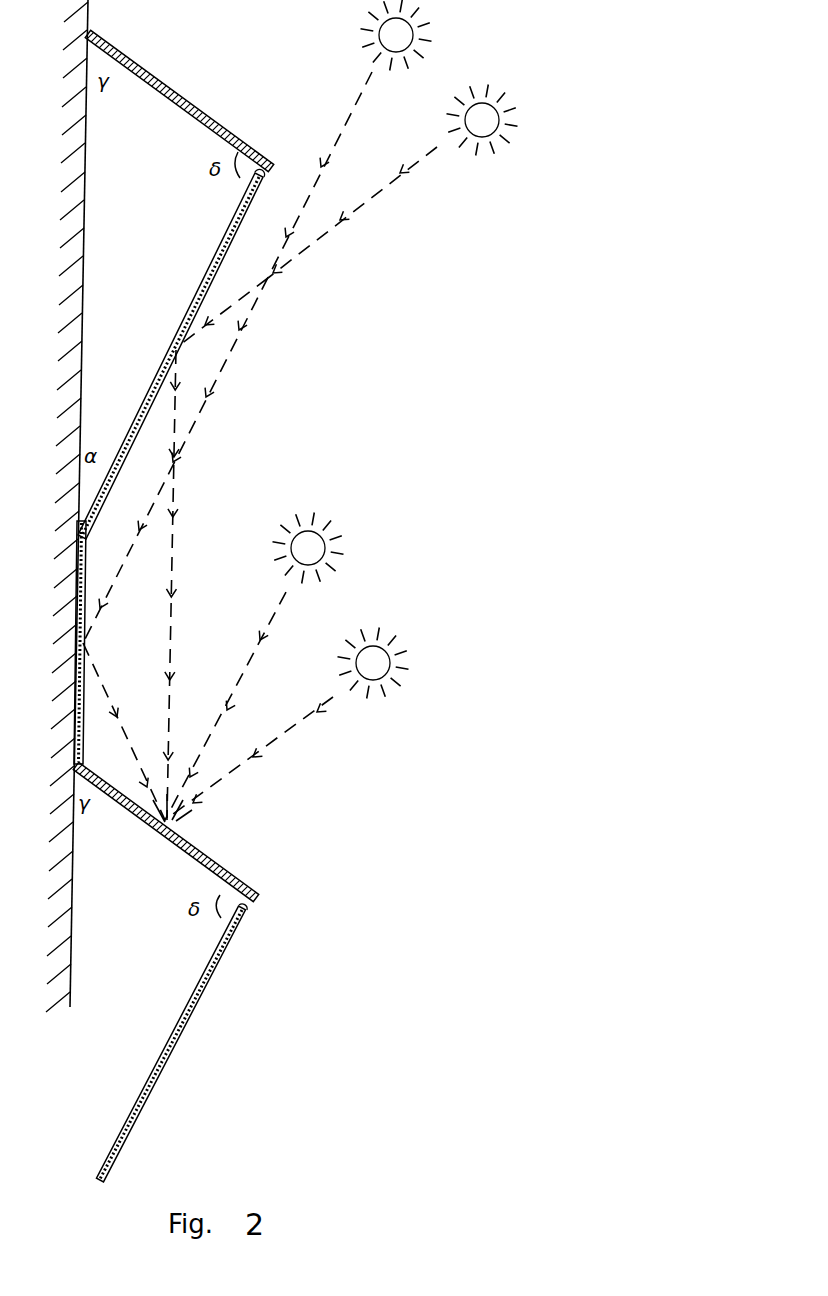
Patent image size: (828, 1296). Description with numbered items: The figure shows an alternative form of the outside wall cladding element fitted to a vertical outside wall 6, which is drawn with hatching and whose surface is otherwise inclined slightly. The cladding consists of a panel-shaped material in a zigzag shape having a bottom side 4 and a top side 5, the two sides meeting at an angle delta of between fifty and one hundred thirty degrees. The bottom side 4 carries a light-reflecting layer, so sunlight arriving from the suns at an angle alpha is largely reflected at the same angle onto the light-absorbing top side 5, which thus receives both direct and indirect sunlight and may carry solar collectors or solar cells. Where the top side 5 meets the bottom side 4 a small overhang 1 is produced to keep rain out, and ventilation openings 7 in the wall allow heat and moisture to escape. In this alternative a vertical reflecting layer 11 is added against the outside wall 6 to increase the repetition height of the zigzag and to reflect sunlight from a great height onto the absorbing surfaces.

The overhang 1 is at (193, 606).
The bottom side 4 is at (218, 264).
The top side 5 is at (185, 94).
The outside wall 6 is at (68, 374).
The ventilation openings 7 is at (268, 182).
The vertical reflecting layer 11 is at (90, 572).